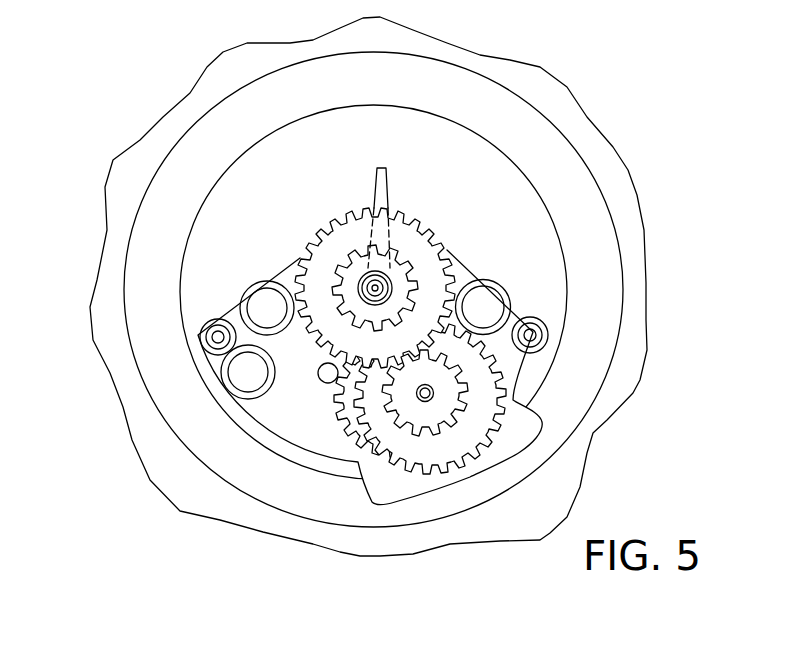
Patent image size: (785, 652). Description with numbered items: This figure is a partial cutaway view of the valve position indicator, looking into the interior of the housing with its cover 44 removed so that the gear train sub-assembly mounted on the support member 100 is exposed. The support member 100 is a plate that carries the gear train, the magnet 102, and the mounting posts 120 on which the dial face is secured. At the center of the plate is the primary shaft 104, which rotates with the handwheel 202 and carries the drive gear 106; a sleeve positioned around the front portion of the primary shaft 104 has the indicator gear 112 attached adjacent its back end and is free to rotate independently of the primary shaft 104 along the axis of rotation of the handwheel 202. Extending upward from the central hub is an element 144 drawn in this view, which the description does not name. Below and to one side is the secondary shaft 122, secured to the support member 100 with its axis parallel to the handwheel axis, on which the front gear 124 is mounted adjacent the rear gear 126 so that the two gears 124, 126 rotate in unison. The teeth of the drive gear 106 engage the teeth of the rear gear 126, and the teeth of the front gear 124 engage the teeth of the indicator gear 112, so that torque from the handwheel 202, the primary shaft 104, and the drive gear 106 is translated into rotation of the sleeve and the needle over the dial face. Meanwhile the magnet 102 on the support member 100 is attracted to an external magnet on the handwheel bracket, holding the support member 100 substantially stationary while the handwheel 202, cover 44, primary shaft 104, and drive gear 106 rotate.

The cover 44 is at (495, 103).
The handwheel 202 is at (637, 193).
The support member 100 is at (290, 418).
The mounting posts 120 is at (200, 337).
The magnet 102 is at (343, 422).
The rear gear 126 is at (383, 436).
The primary shaft 104 is at (345, 258).
The indicator gear 112 is at (420, 258).
The drive gear 106 is at (405, 272).
The indicator shaft 144 is at (384, 183).
The front gear 124 is at (420, 415).
The secondary shaft 122 is at (430, 397).